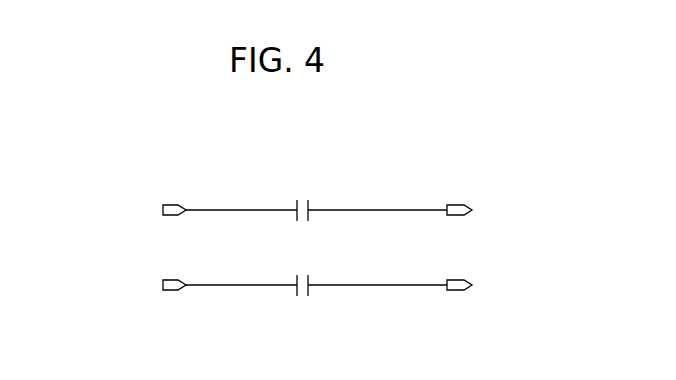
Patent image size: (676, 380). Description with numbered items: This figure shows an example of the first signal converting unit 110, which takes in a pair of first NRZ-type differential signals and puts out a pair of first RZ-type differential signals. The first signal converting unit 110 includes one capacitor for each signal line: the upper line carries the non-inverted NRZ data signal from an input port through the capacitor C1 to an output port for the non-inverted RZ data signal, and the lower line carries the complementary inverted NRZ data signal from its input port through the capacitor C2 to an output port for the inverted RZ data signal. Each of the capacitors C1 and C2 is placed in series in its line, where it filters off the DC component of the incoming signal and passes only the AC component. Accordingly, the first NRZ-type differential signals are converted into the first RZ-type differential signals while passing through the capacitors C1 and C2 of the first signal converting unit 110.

The first signal converting unit 110 is at (88, 137).
The capacitor C1 is at (312, 220).
The capacitor C2 is at (312, 295).